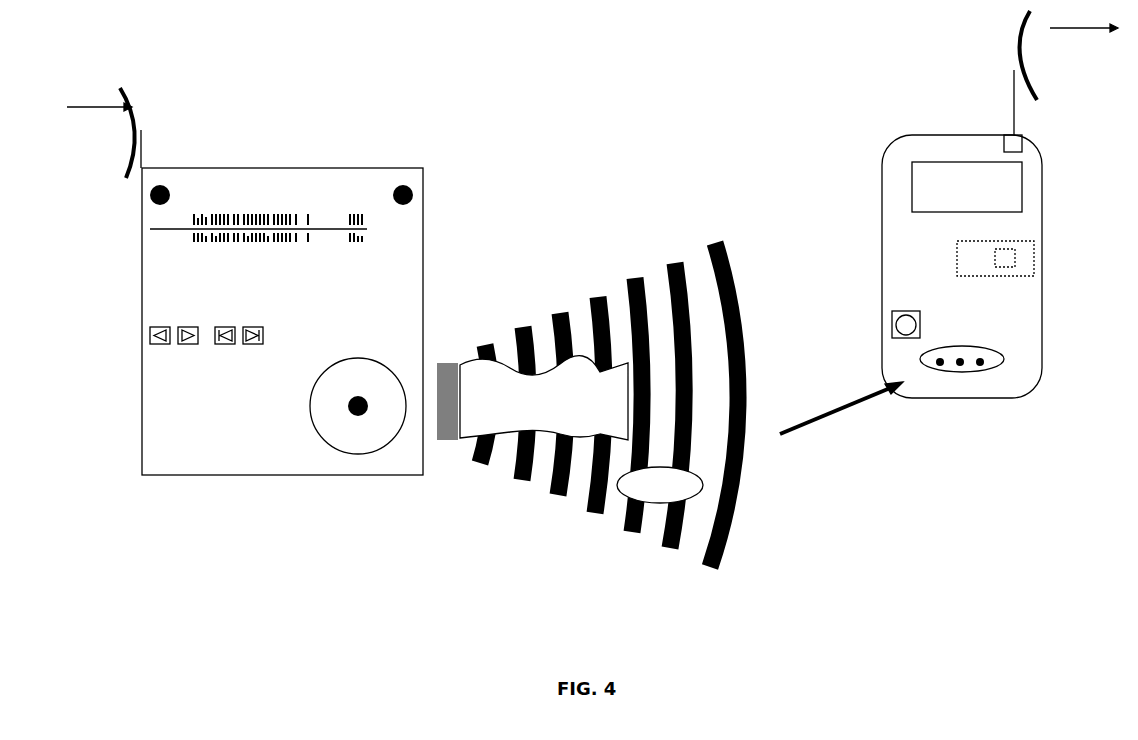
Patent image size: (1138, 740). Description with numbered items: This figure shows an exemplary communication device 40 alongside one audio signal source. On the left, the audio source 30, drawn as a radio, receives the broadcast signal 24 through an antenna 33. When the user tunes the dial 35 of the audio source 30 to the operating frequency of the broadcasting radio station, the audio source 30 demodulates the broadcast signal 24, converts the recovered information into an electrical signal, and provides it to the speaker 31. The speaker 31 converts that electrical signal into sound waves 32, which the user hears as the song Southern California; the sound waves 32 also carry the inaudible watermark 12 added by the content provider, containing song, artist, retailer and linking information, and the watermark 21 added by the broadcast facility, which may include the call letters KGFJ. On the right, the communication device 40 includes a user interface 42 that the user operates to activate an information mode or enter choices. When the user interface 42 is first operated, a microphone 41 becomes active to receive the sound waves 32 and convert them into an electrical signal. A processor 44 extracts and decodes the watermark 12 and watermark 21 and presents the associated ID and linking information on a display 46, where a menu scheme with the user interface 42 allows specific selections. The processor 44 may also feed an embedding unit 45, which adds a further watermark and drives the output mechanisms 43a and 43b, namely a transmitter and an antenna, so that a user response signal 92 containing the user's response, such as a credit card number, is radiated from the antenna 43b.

The broadcast signal 24 is at (90, 80).
The antenna 33 is at (150, 133).
The dial 35 is at (375, 230).
The audio source 30 is at (282, 321).
The speaker 31 is at (375, 458).
The watermark 12 is at (543, 360).
The sound waves 32 is at (609, 420).
The watermark 21 is at (700, 495).
The communication device 40 is at (863, 152).
The output mechanism 43a is at (1014, 144).
The output mechanism 43b is at (1060, 107).
The user response signal 92 is at (1085, 44).
The display 46 is at (1005, 196).
The processor 44 is at (1032, 248).
The embedding unit 45 is at (1005, 258).
The user interface 42 is at (890, 318).
The microphone 41 is at (1013, 363).